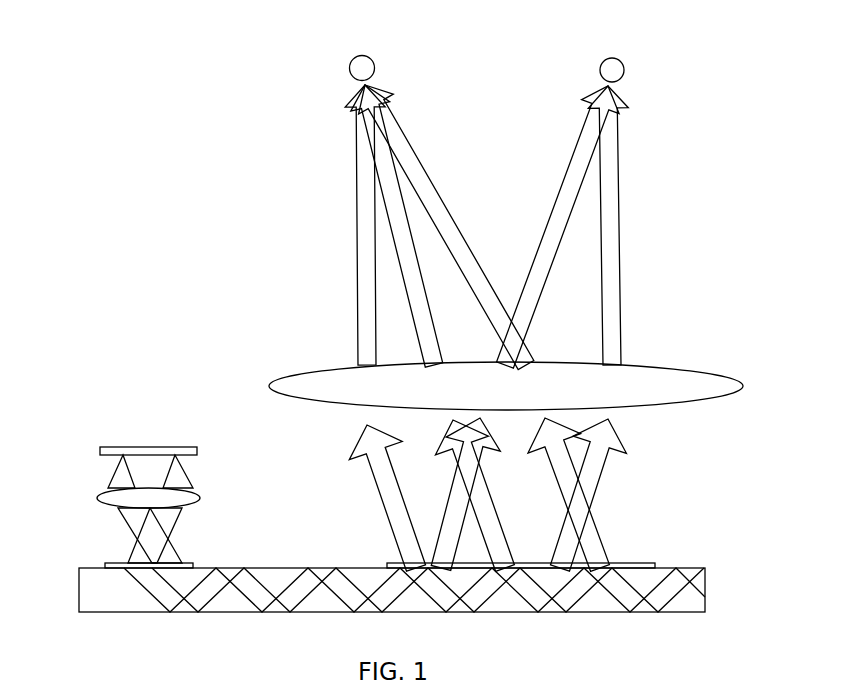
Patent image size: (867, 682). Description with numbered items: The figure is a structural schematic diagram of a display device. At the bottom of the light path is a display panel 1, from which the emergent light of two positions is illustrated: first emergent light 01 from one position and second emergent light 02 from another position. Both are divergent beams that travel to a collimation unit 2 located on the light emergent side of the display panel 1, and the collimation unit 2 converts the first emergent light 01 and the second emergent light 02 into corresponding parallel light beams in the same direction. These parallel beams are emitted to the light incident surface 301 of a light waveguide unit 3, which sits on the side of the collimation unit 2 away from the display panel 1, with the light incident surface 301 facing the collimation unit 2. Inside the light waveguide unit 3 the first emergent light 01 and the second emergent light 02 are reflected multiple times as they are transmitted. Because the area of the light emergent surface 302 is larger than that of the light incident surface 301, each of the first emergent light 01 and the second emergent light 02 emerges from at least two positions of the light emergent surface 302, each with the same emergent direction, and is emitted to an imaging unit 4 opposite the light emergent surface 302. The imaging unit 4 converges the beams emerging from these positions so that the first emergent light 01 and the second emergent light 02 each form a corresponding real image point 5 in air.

The display panel 1 is at (152, 450).
The first emergent light 01 is at (112, 472).
The second emergent light 02 is at (182, 472).
The collimation unit 2 is at (105, 500).
The light waveguide unit 3 is at (87, 595).
The light incident surface 301 is at (105, 563).
The light emergent surface 302 is at (650, 562).
The imaging unit 4 is at (712, 387).
The real image point 5 is at (372, 60).